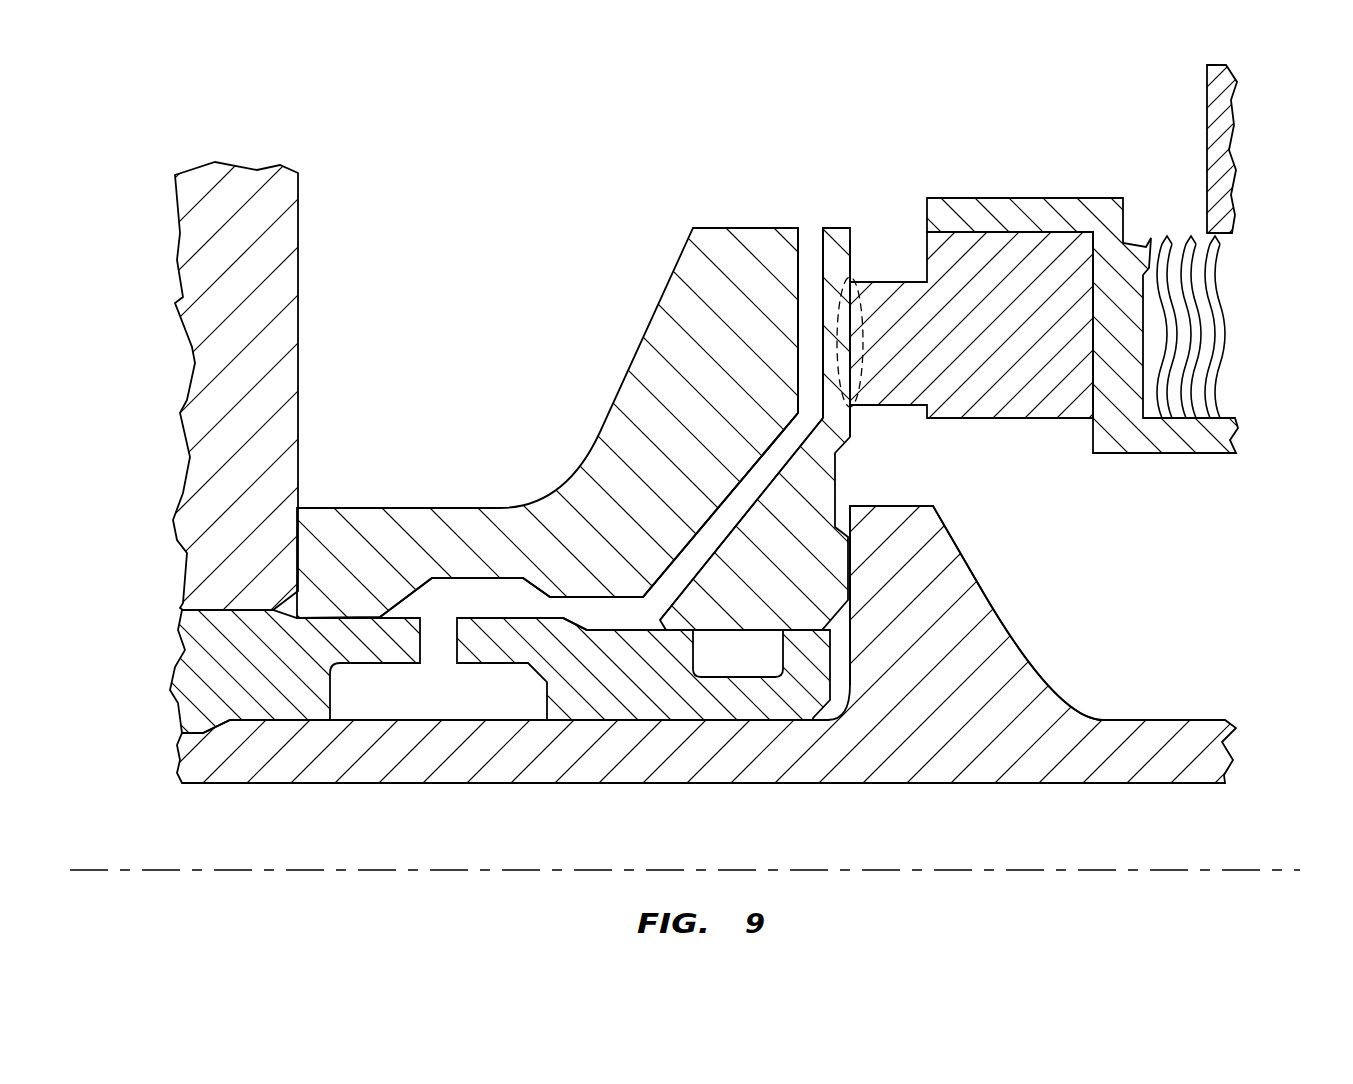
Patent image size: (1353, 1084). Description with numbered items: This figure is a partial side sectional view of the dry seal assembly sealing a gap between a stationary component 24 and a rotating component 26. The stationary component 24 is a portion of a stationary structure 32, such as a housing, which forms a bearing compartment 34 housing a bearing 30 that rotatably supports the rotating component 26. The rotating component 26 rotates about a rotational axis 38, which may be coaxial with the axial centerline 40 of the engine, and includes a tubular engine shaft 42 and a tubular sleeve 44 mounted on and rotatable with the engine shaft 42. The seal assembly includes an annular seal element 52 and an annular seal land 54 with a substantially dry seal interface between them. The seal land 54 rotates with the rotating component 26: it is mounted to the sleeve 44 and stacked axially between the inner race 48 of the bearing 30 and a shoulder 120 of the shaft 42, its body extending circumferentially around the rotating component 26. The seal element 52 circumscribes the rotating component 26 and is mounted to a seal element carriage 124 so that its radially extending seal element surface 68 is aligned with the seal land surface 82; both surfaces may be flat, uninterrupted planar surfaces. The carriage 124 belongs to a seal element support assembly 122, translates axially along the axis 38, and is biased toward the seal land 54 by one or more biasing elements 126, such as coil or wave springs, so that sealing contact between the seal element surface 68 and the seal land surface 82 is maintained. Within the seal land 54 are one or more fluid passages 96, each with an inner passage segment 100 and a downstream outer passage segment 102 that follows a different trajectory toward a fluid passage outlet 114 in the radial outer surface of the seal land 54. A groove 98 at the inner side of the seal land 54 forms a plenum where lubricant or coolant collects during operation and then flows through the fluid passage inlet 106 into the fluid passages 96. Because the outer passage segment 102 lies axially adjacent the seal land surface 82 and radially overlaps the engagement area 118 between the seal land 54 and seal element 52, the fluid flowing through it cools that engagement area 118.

The stationary component 24 is at (1195, 149).
The stationary structure 32 is at (1200, 78).
The rotating component 26 is at (196, 795).
The bearing 30 is at (360, 386).
The inner race 48 is at (304, 232).
The bearing compartment 34 is at (613, 385).
The rotational axis 38 is at (695, 820).
The axial centerline 40 is at (1283, 868).
The engine shaft 42 is at (166, 764).
The tubular sleeve 44 is at (166, 661).
The seal element 52 is at (997, 425).
The seal land 54 is at (613, 385).
The seal element surface 68 is at (845, 388).
The seal land surface 82 is at (850, 245).
The fluid passage 96 is at (750, 450).
The groove 98 is at (522, 598).
The inner passage segment 100 is at (690, 552).
The outer passage segment 102 is at (803, 317).
The fluid passage inlet 106 is at (642, 610).
The fluid passage outlet 114 is at (812, 227).
The engagement area 118 is at (872, 345).
The shoulder 120 is at (983, 588).
The seal element support assembly 122 is at (1198, 480).
The seal element carriage 124 is at (1140, 456).
The biasing element 126 is at (1222, 373).